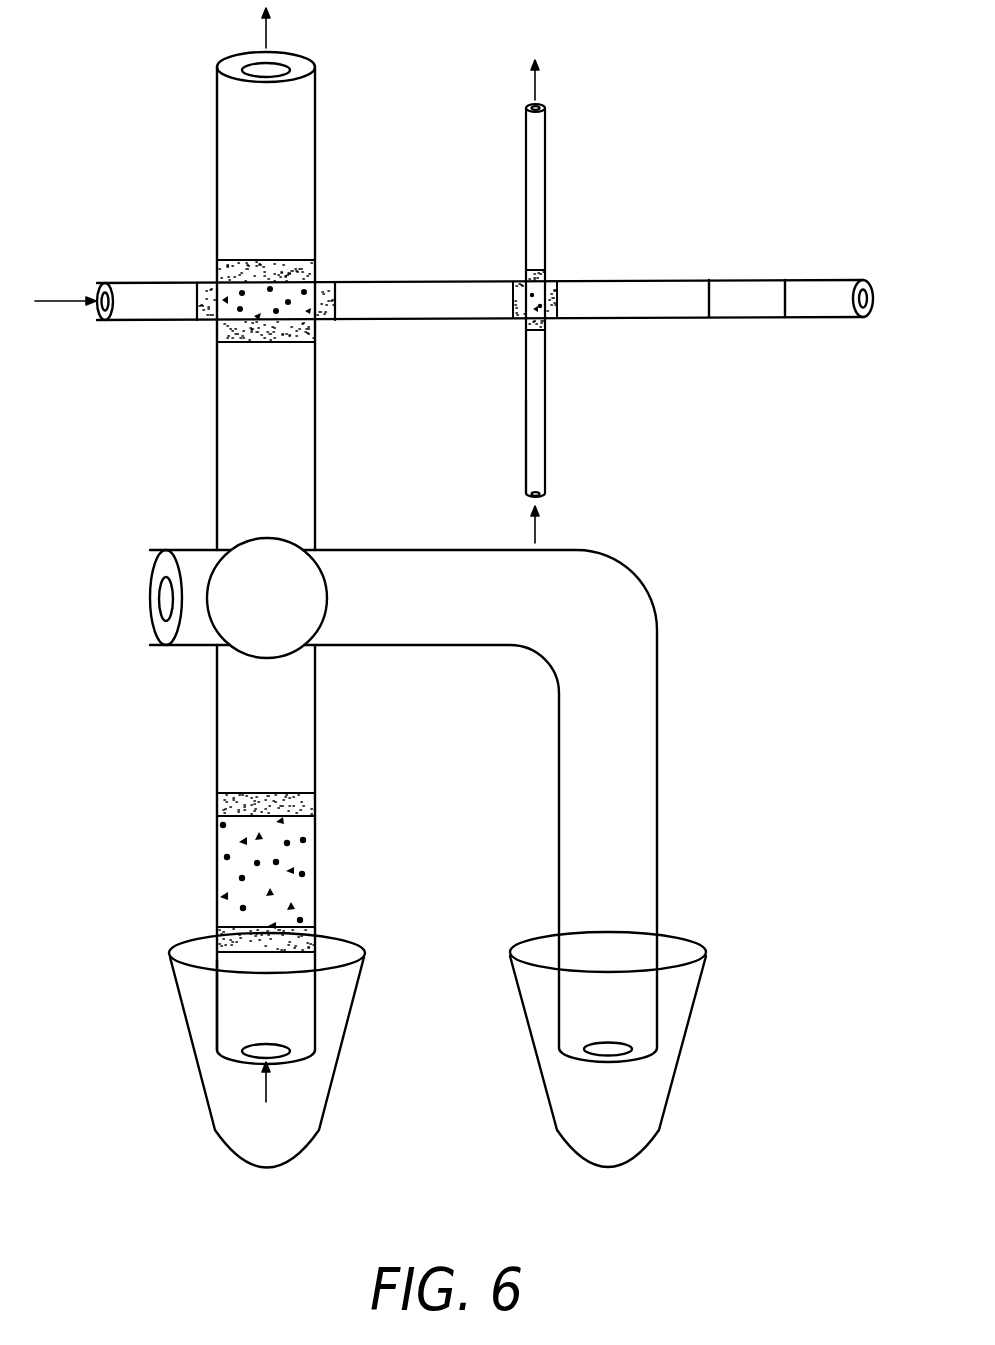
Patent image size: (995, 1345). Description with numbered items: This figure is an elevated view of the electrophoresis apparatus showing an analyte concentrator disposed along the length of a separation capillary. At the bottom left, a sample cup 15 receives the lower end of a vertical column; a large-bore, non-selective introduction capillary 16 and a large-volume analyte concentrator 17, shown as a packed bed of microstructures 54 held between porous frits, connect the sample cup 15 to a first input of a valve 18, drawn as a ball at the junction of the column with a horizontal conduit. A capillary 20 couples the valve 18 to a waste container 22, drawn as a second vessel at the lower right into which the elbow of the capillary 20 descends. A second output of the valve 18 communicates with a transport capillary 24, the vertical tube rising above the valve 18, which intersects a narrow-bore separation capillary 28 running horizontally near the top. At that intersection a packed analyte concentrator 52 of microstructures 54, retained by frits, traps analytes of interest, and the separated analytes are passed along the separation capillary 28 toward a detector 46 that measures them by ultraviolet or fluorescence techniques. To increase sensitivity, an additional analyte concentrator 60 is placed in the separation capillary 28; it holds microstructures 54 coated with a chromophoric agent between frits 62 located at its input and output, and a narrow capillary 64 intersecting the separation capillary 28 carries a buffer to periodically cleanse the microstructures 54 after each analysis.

The sample cup 15 is at (305, 1081).
The introduction capillary 16 is at (213, 985).
The analyte concentrator 17 is at (308, 908).
The valve 18 is at (255, 555).
The capillary 20 is at (353, 567).
The waste container 22 is at (672, 1017).
The transport capillary 24 is at (238, 727).
The separation capillary 28 is at (167, 283).
The detector 46 is at (725, 279).
The packed sorbent bed 52 is at (255, 290).
The microstructures 54 is at (242, 292).
The analyte concentrator 60 is at (527, 272).
The frits 62 is at (522, 321).
The narrow capillary 64 is at (537, 433).